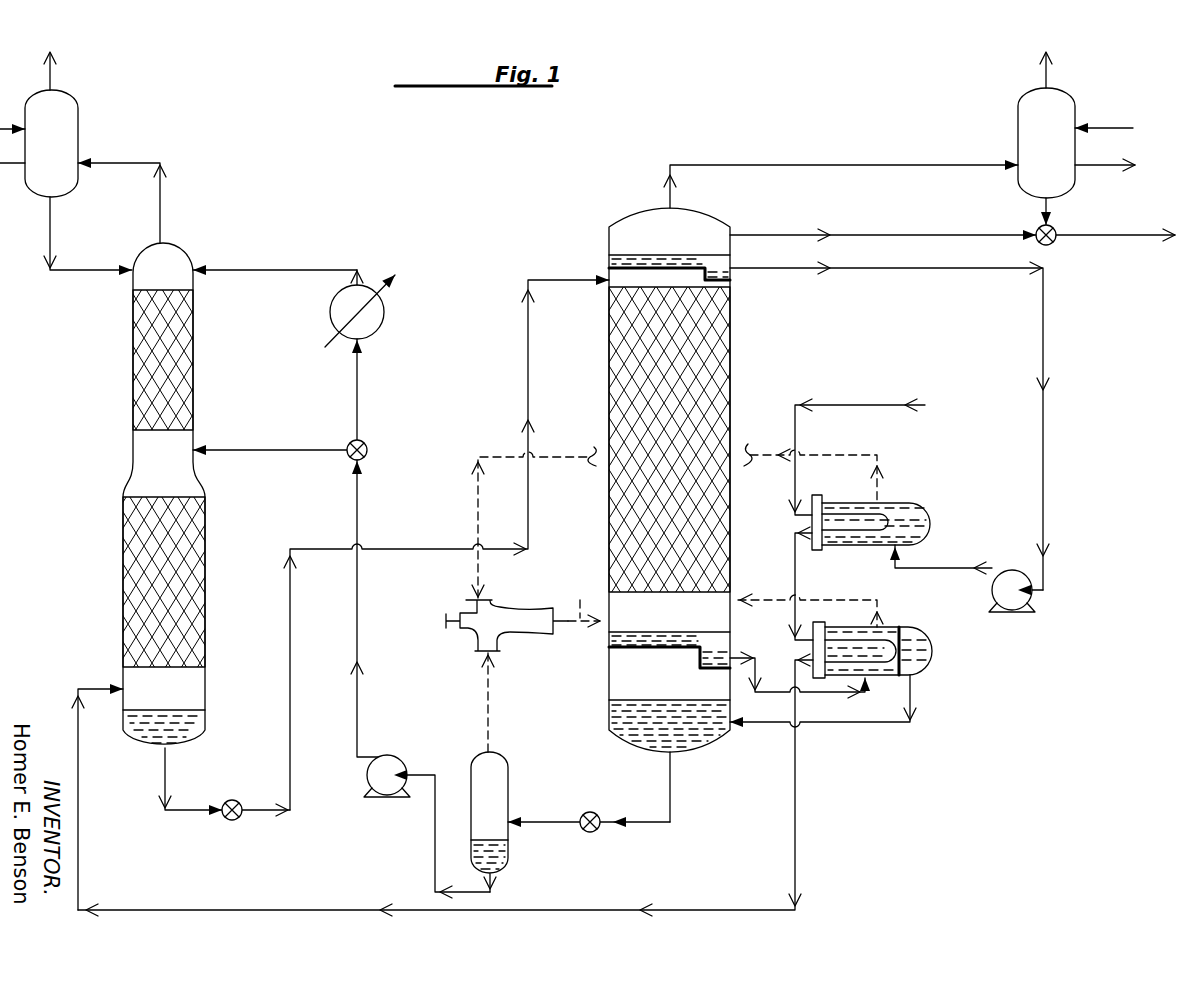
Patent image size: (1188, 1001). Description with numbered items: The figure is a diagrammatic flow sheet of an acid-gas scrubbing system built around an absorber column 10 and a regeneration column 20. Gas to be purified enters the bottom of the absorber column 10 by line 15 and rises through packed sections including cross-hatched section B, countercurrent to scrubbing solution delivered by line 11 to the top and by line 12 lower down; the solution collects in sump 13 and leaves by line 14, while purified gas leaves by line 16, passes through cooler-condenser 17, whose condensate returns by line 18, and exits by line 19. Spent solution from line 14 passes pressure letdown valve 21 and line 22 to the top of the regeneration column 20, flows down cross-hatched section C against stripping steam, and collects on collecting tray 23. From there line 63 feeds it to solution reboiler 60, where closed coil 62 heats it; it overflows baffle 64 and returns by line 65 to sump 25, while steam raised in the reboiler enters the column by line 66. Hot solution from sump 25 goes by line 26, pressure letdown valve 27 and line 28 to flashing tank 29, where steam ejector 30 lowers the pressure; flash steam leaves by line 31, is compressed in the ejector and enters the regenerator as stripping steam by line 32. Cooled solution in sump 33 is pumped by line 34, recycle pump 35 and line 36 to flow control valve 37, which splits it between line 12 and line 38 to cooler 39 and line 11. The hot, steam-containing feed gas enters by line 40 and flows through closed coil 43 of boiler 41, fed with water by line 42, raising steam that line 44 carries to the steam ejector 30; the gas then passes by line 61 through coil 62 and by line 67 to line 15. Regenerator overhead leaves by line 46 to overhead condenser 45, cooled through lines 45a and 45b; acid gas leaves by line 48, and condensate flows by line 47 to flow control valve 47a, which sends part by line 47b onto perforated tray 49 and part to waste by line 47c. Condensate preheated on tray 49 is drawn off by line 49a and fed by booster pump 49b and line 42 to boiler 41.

The absorber column 10 is at (147, 501).
The line 11 is at (266, 268).
The line 12 is at (265, 448).
The sump 13 is at (186, 730).
The line 14 is at (162, 772).
The line 15 is at (92, 687).
The line 16 is at (162, 197).
The cooler-condenser 17 is at (66, 122).
The line 18 is at (48, 229).
The line 19 is at (47, 70).
The regeneration column 20 is at (664, 497).
The pressure letdown valve 21 is at (234, 828).
The line 22 is at (316, 547).
The collecting tray 23 is at (665, 650).
The sump 25 is at (700, 722).
The line 26 is at (673, 805).
The pressure letdown valve 27 is at (598, 832).
The line 28 is at (548, 826).
The flashing tank 29 is at (509, 822).
The steam ejector 30 is at (528, 607).
The line 31 is at (486, 708).
The line 32 is at (582, 602).
The sump 33 is at (497, 870).
The line 34 is at (432, 856).
The recycle pump 35 is at (390, 762).
The line 36 is at (360, 630).
The flow control valve 37 is at (368, 449).
The line 38 is at (358, 398).
The cooler 39 is at (350, 306).
The line 40 is at (856, 403).
The boiler 41 is at (873, 524).
The line 42 is at (958, 566).
The closed coil 43 is at (872, 546).
The line 44 is at (478, 520).
The overhead condenser 45 is at (1016, 128).
The line 45a is at (1113, 126).
The line 45b is at (1108, 176).
The line 46 is at (862, 167).
The line 47 is at (1040, 205).
The flow control valve 47a is at (1052, 245).
The line 47b is at (960, 233).
The line 47c is at (1129, 238).
The line 48 is at (1044, 70).
The perforated tray 49 is at (640, 268).
The line 49a is at (976, 271).
The booster pump 49b is at (1014, 604).
The solution reboiler 60 is at (891, 651).
The line 61 is at (795, 573).
The closed coil 62 is at (882, 677).
The line 63 is at (826, 695).
The baffle 64 is at (903, 660).
The line 65 is at (917, 708).
The line 66 is at (828, 598).
The line 67 is at (792, 834).
The cross-hatched section B is at (172, 358).
The cross-hatched section C is at (697, 362).